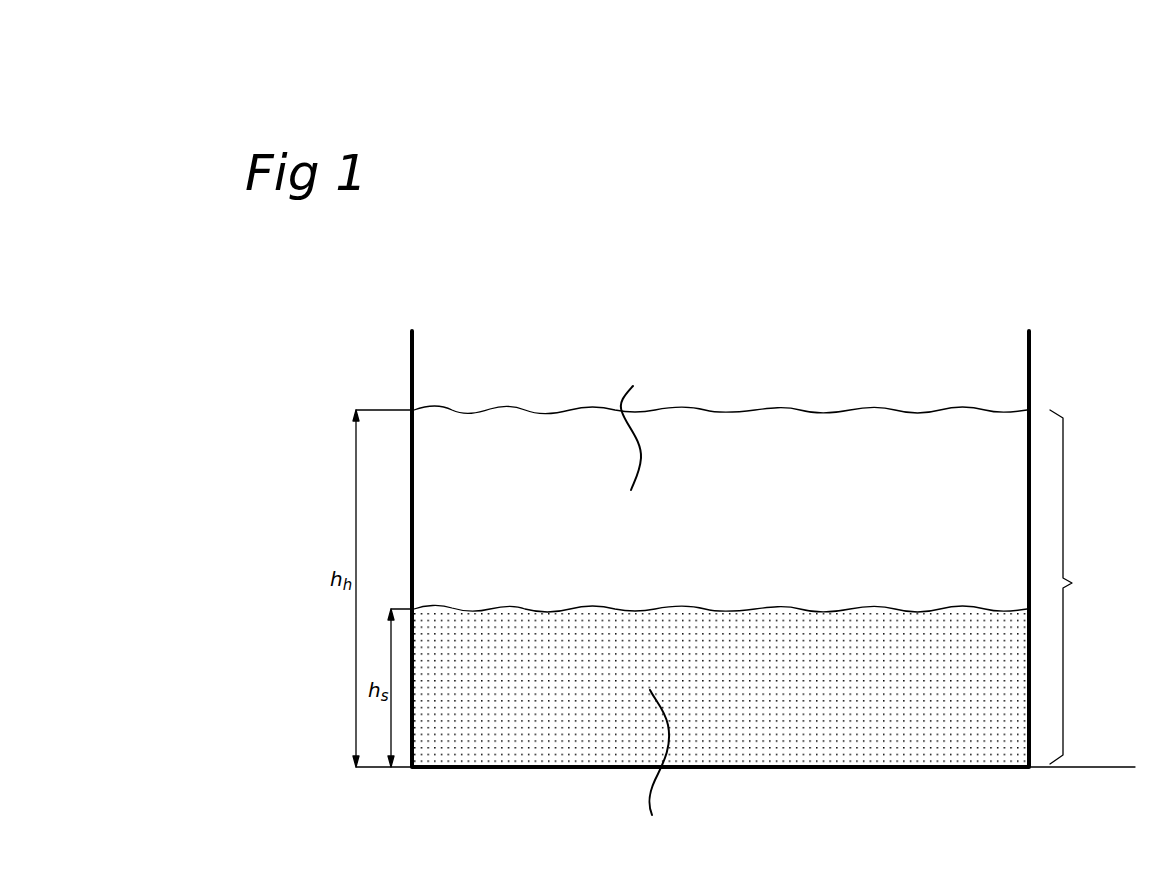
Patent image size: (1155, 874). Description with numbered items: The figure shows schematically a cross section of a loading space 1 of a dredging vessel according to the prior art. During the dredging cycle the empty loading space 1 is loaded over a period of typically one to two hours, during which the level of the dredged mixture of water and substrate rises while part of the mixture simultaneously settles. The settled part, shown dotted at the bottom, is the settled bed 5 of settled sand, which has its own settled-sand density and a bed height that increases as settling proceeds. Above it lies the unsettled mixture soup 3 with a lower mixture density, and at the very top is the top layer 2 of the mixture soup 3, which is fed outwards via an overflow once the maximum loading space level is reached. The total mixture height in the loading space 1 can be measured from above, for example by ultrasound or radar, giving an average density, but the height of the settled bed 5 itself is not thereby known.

The loading space 1 is at (772, 326).
The top layer 2 is at (927, 410).
The mixture soup 3 is at (1000, 494).
The settled bed 5 is at (990, 690).